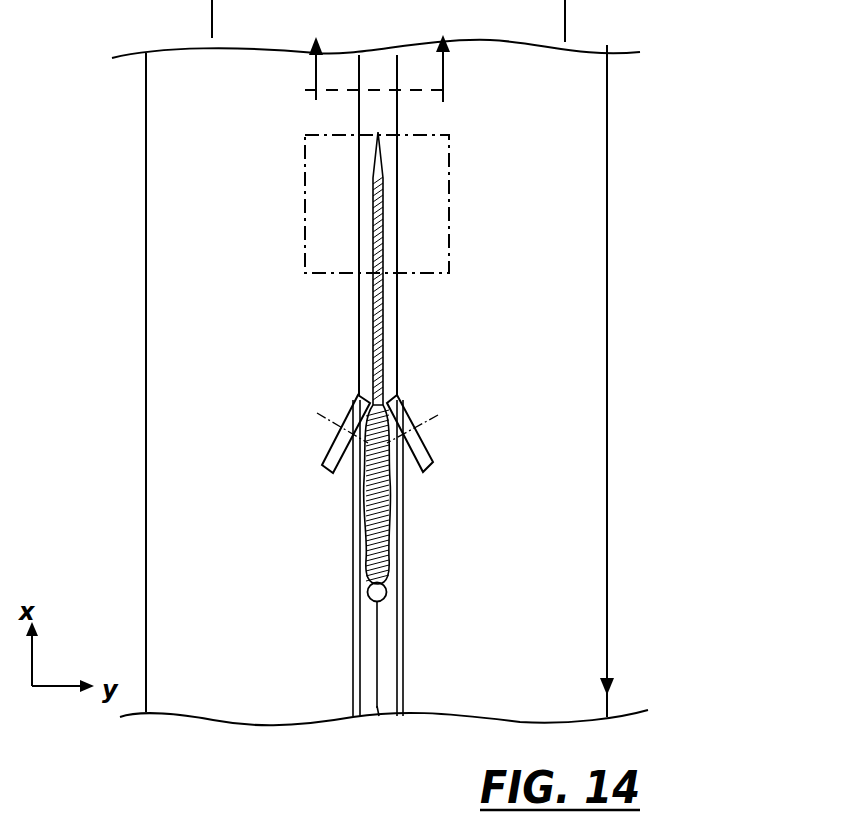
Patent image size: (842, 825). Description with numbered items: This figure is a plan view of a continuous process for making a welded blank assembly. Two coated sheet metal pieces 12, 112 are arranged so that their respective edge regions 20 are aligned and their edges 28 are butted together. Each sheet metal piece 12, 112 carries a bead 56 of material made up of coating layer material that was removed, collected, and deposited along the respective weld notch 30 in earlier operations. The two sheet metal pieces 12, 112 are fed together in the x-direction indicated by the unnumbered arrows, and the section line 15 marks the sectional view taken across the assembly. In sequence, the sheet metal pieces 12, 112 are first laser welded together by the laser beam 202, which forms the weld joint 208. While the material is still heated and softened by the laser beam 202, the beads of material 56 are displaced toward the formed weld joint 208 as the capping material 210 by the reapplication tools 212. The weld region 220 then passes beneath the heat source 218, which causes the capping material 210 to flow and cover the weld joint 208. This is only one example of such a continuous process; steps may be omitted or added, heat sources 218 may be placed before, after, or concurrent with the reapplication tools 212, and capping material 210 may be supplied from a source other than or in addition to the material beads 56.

The coated sheet metal piece 12 is at (232, 719).
The coated sheet metal piece 112 is at (608, 690).
The section line 15- 15 is at (380, 71).
The heat source 218 is at (449, 245).
The capping material 210 is at (362, 323).
The reapplication tool 212 is at (390, 413).
The weld region 220 is at (360, 498).
The weld joint 208 is at (382, 533).
The edge region 20 is at (389, 660).
The laser beam 202 is at (368, 587).
The bead of material 56 is at (358, 630).
The weld notch 30 is at (368, 688).
The edge 28 is at (380, 706).